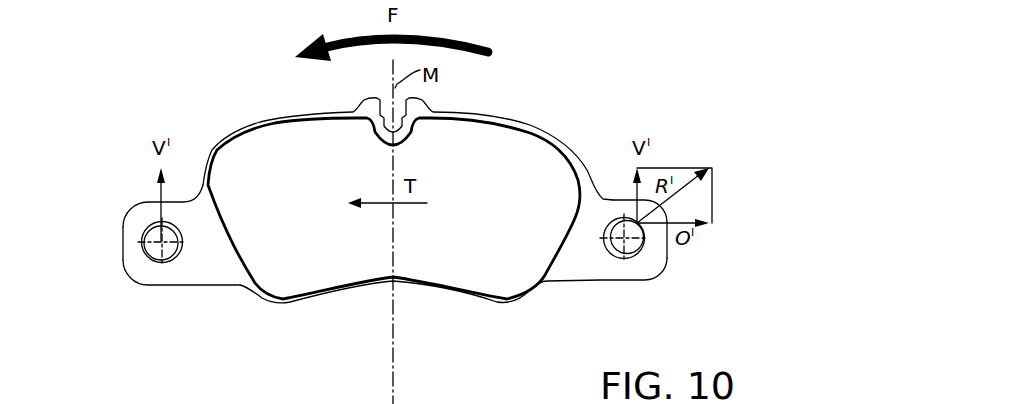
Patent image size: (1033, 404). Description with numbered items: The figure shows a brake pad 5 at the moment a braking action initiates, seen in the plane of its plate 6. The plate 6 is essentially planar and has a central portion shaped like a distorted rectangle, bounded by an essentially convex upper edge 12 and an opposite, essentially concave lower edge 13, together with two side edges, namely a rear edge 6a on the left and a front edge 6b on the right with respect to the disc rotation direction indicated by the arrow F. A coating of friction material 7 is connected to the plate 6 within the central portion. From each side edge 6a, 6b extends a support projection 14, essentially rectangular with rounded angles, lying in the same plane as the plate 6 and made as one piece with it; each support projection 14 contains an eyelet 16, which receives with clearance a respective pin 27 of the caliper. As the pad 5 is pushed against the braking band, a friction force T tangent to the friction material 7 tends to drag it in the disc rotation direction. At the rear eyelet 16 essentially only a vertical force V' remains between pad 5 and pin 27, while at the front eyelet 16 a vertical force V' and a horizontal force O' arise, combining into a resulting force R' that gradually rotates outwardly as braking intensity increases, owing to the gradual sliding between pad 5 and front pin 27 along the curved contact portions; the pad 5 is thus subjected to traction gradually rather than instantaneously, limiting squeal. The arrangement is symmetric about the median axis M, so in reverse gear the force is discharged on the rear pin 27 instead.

The pad 5 is at (249, 100).
The plate 6 is at (520, 120).
The rear edge 6a is at (122, 255).
The front edge 6b is at (667, 252).
The friction material 7 is at (537, 168).
The upper edge 12 is at (467, 110).
The lower edge 13 is at (396, 280).
The support projection 14 is at (140, 217).
The eyelet 16 is at (173, 260).
The pin 27 is at (160, 252).